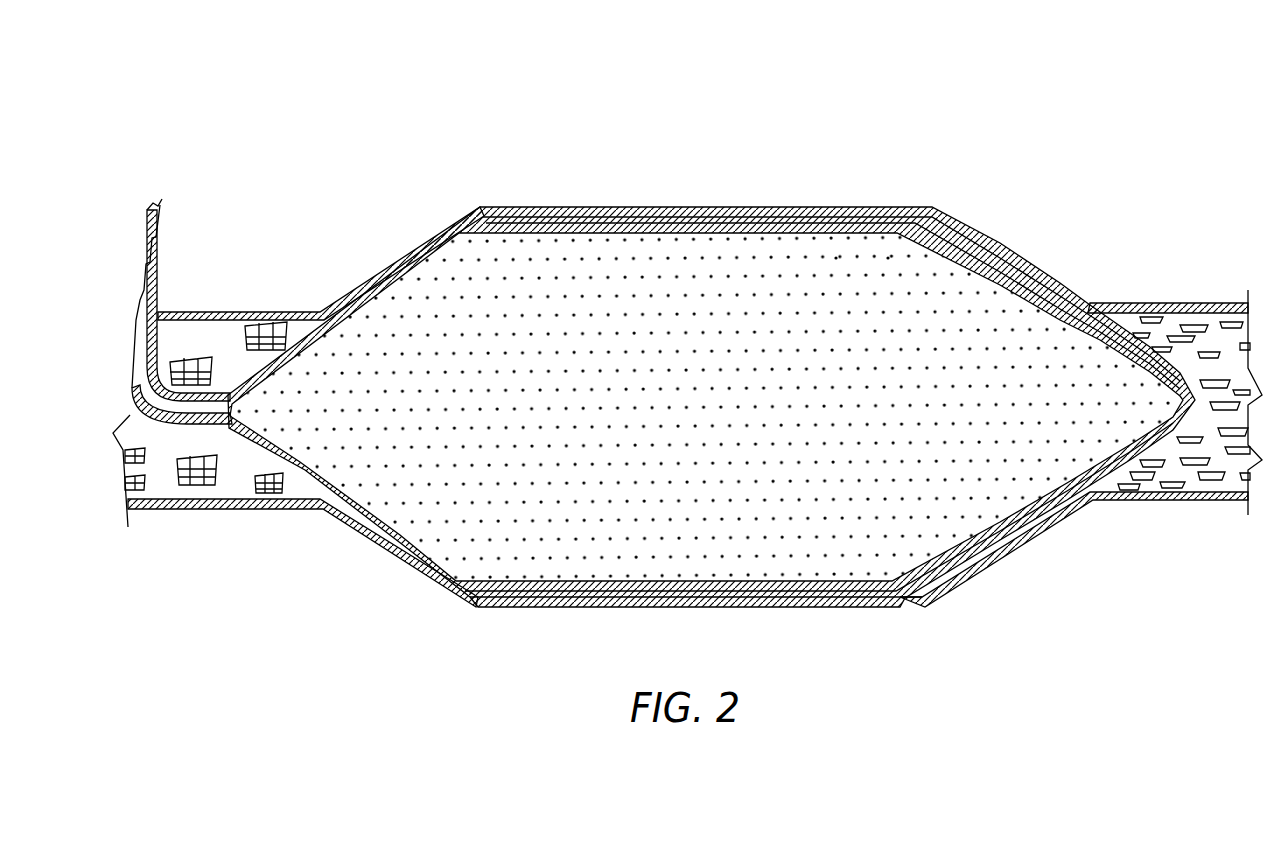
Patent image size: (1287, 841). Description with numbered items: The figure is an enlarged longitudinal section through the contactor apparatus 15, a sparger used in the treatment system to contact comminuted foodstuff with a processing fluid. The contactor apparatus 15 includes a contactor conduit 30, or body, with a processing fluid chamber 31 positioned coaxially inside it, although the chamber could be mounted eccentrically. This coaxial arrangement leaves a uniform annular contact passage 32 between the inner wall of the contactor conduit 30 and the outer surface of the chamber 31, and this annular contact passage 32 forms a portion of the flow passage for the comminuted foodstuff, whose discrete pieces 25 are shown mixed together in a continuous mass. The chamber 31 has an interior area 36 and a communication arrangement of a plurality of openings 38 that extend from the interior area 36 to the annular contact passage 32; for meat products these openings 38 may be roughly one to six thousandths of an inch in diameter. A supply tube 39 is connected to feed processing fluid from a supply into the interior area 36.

The contactor apparatus 15 is at (952, 163).
The discrete pieces 25 is at (184, 355).
The contactor conduit 30 is at (540, 205).
The processing fluid chamber 31 is at (298, 472).
The annular contact passage 32 is at (631, 221).
The interior area 36 is at (480, 509).
The openings 38 is at (891, 256).
The supply tube 39 is at (138, 318).